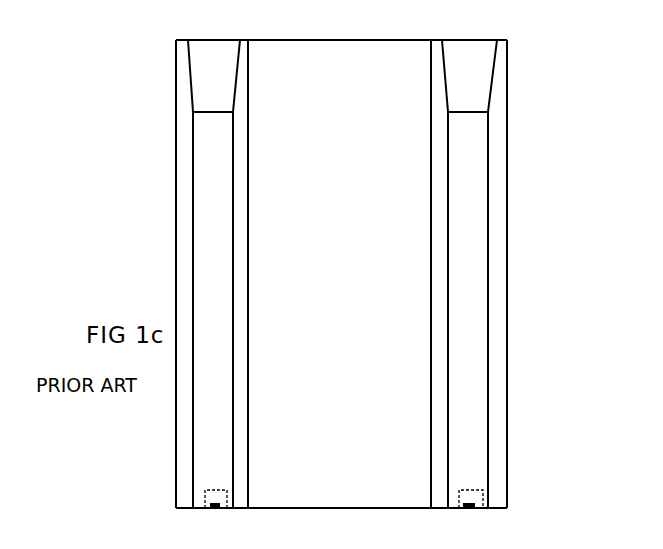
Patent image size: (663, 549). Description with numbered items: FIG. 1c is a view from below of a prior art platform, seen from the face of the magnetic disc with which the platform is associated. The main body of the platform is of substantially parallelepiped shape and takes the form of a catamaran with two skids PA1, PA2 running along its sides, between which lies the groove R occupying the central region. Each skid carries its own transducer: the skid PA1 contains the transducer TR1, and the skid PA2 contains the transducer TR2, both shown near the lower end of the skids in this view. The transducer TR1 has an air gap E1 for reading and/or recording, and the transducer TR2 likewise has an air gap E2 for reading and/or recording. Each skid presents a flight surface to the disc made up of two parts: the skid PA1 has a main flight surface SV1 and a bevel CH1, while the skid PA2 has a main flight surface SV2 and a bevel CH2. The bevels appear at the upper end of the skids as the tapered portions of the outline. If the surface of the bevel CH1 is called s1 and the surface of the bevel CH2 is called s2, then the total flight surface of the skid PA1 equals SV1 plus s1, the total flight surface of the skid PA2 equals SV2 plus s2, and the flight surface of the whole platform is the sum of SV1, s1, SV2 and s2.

The groove R is at (334, 68).
The surface of bevel CH1 s1 is at (217, 60).
The surface of bevel CH2 s2 is at (466, 60).
The bevel CH1 is at (197, 64).
The bevel CH2 is at (484, 70).
The skid PA1 is at (198, 158).
The skid PA2 is at (480, 160).
The main flight surface SV1 is at (199, 228).
The main flight surface SV2 is at (480, 232).
The transducer TR1 is at (227, 490).
The transducer TR2 is at (459, 497).
The air gap E1 is at (210, 503).
The air gap E2 is at (480, 502).